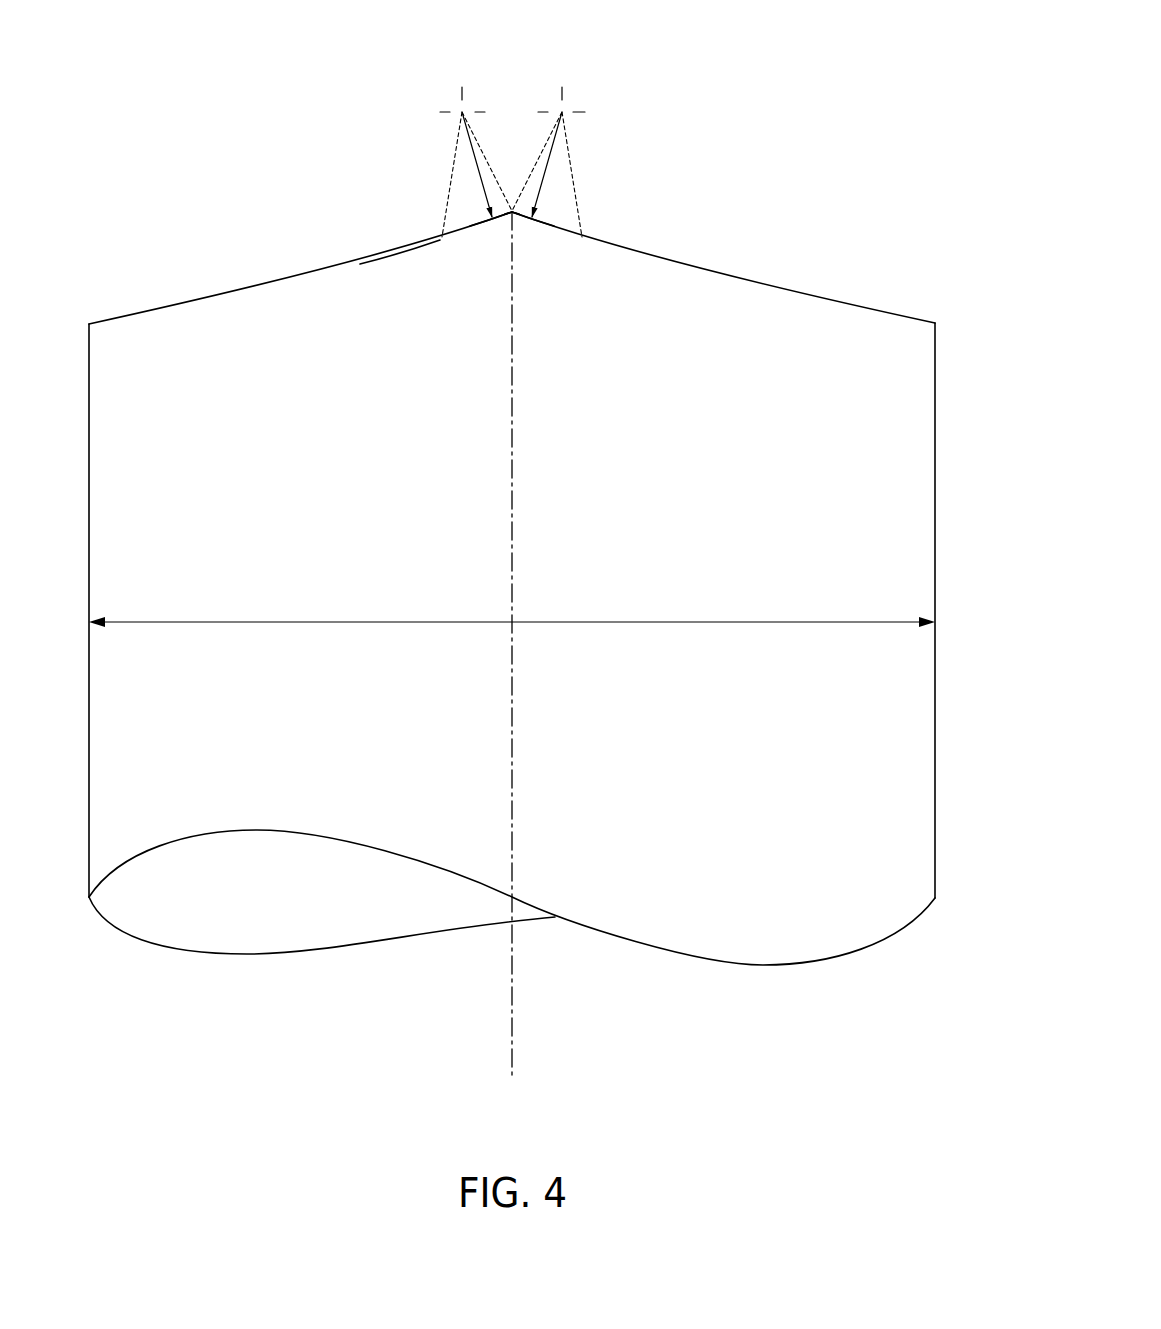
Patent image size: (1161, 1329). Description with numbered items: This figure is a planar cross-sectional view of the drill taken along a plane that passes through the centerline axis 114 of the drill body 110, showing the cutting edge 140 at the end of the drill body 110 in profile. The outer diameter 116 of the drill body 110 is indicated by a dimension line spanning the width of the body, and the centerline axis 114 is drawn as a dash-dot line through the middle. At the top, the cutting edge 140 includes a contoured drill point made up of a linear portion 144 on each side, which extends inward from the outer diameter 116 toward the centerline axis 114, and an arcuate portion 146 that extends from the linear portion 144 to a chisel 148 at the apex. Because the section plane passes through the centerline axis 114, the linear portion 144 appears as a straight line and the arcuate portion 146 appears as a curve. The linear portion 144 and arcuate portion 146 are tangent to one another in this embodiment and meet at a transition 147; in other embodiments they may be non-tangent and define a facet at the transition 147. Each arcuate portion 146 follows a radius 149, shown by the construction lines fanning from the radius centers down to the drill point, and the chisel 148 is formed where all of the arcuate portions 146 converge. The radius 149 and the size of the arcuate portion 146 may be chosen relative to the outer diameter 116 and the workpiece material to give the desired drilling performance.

The drill body 110 is at (755, 113).
The cutting edge 140 is at (830, 208).
The linear portion 144 is at (313, 268).
The arcuate portion 146 is at (482, 232).
The transition 147 is at (383, 255).
The chisel 148 is at (511, 210).
The radius 149 is at (477, 153).
The centerline axis 114 is at (513, 502).
The outer diameter 116 is at (512, 624).